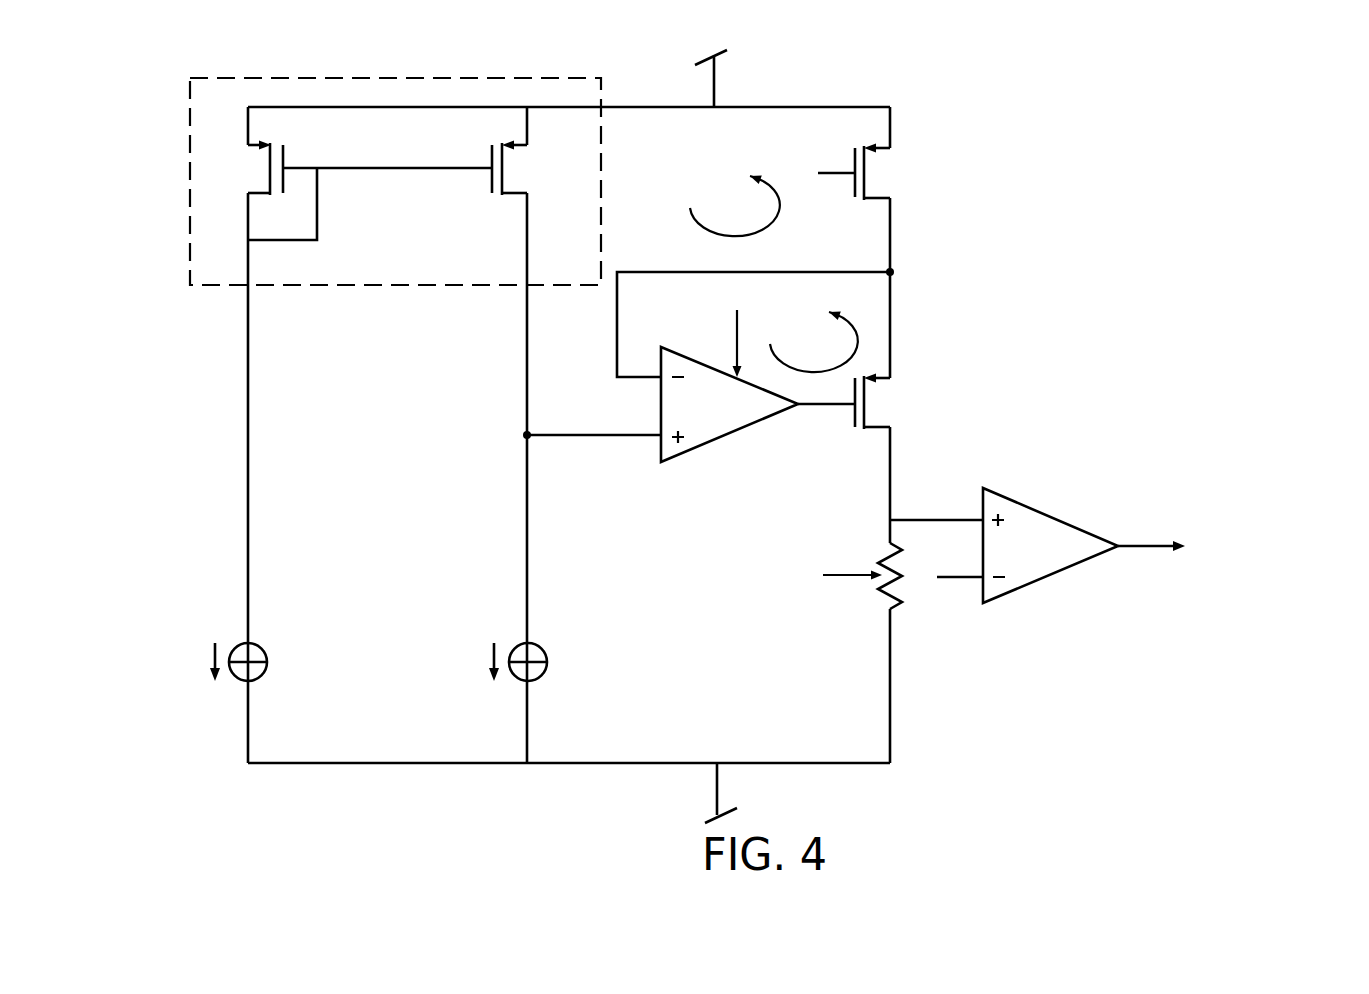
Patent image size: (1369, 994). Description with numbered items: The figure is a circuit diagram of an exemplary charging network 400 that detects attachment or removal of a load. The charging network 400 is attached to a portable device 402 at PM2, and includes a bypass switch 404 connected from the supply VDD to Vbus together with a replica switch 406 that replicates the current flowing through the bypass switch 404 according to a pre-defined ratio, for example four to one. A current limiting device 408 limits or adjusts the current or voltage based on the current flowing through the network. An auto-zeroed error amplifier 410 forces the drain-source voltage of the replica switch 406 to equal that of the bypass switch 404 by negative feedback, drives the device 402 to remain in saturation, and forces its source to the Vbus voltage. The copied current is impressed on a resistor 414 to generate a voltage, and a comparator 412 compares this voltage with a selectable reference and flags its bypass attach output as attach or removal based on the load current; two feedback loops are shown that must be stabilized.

The charging network 400 is at (1049, 84).
The portable device 402 is at (868, 424).
The bypass switch 404 is at (521, 192).
The replica switch 406 is at (868, 195).
The current limiting device 408 is at (259, 192).
The amplifier 410 is at (718, 437).
The comparator 412 is at (1035, 513).
The resistor 414 is at (900, 600).